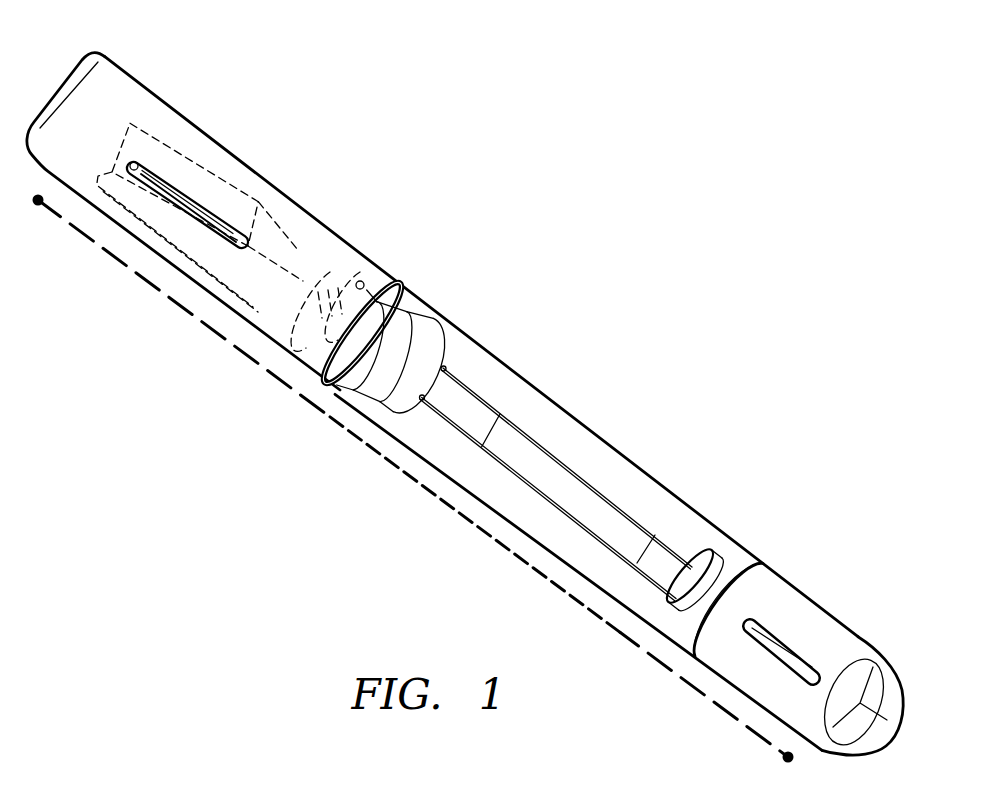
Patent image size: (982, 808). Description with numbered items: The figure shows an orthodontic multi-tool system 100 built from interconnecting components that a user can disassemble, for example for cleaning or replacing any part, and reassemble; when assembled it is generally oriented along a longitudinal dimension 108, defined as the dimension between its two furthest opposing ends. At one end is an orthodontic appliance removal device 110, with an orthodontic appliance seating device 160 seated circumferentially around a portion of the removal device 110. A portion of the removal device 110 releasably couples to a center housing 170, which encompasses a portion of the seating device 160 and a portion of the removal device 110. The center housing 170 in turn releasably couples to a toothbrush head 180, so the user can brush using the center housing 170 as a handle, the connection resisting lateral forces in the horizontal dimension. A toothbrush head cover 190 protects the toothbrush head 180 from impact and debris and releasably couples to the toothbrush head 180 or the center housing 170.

The orthodontic multi-tool system 100 is at (758, 193).
The longitudinal dimension 108 is at (280, 378).
The orthodontic appliance removal device 110 is at (600, 451).
The orthodontic appliance seating device 160 is at (740, 522).
The center housing 170 is at (475, 320).
The toothbrush head 180 is at (295, 254).
The toothbrush head cover 190 is at (238, 142).